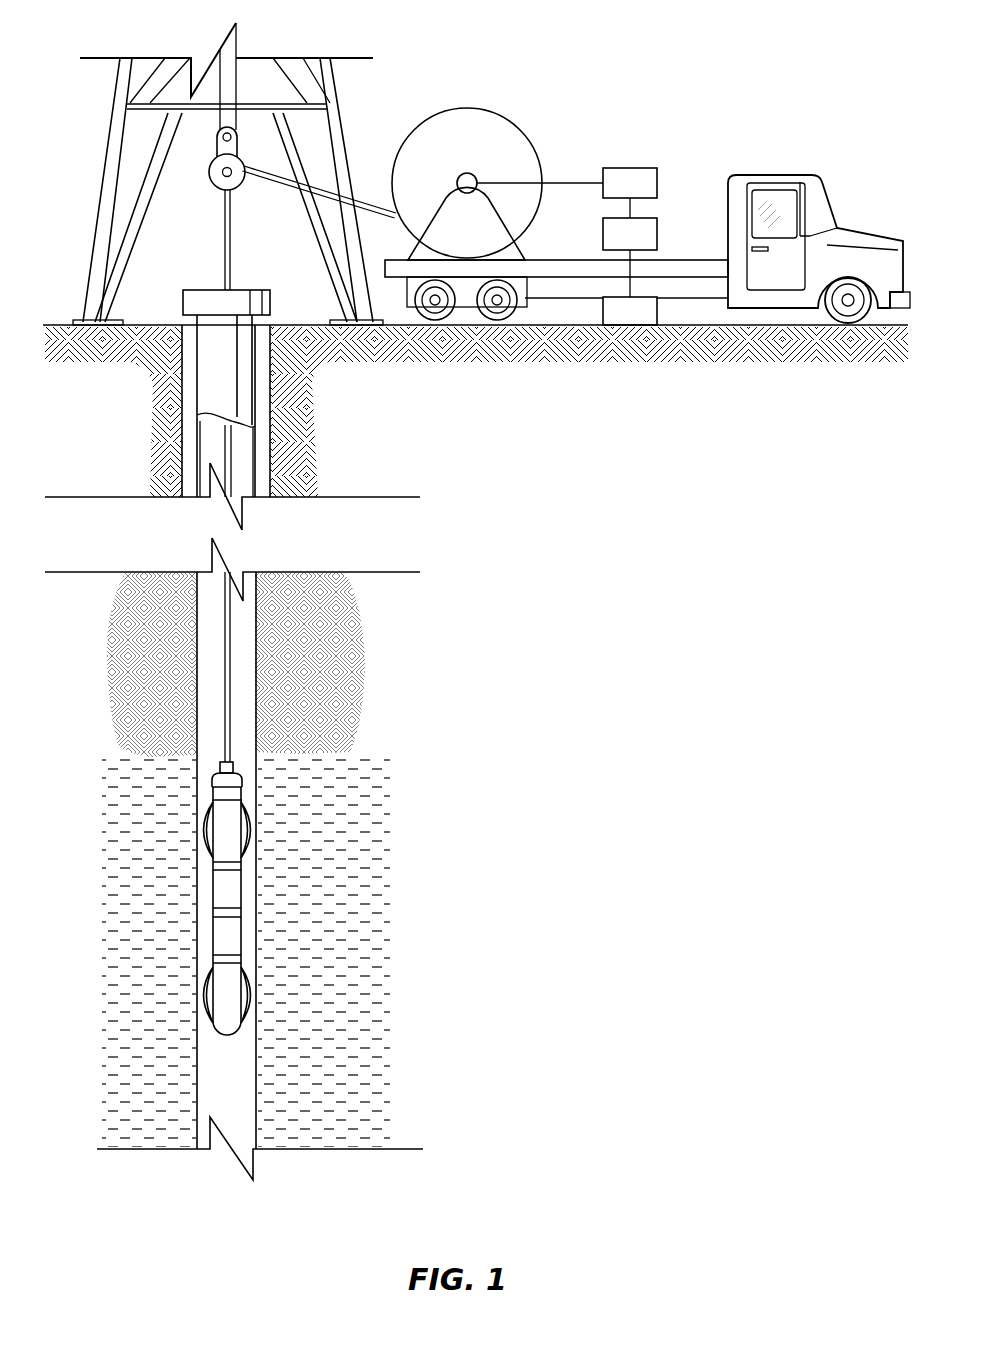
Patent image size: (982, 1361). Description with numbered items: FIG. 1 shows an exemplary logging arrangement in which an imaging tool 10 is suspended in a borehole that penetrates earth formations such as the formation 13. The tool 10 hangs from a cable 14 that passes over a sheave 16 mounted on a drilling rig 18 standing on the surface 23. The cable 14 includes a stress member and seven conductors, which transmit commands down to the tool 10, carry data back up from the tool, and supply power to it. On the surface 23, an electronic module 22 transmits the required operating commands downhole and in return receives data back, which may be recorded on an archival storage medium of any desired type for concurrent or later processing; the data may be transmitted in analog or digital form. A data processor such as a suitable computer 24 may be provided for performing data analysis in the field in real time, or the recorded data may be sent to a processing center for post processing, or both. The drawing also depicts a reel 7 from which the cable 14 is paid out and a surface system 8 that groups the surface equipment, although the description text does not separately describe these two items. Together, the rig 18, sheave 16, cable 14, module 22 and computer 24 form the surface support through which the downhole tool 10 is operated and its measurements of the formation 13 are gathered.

The cable reel / winch drum 7 is at (467, 107).
The surface system / logging truck 8 is at (647, 186).
The imaging tool 10 is at (250, 877).
The earth formations 13 is at (449, 624).
The cable 14 is at (230, 268).
The sheave 16 is at (207, 177).
The drilling rig 18 is at (112, 100).
The electronic module 22 is at (640, 168).
The surface 23 is at (63, 325).
The computer 24 is at (657, 232).